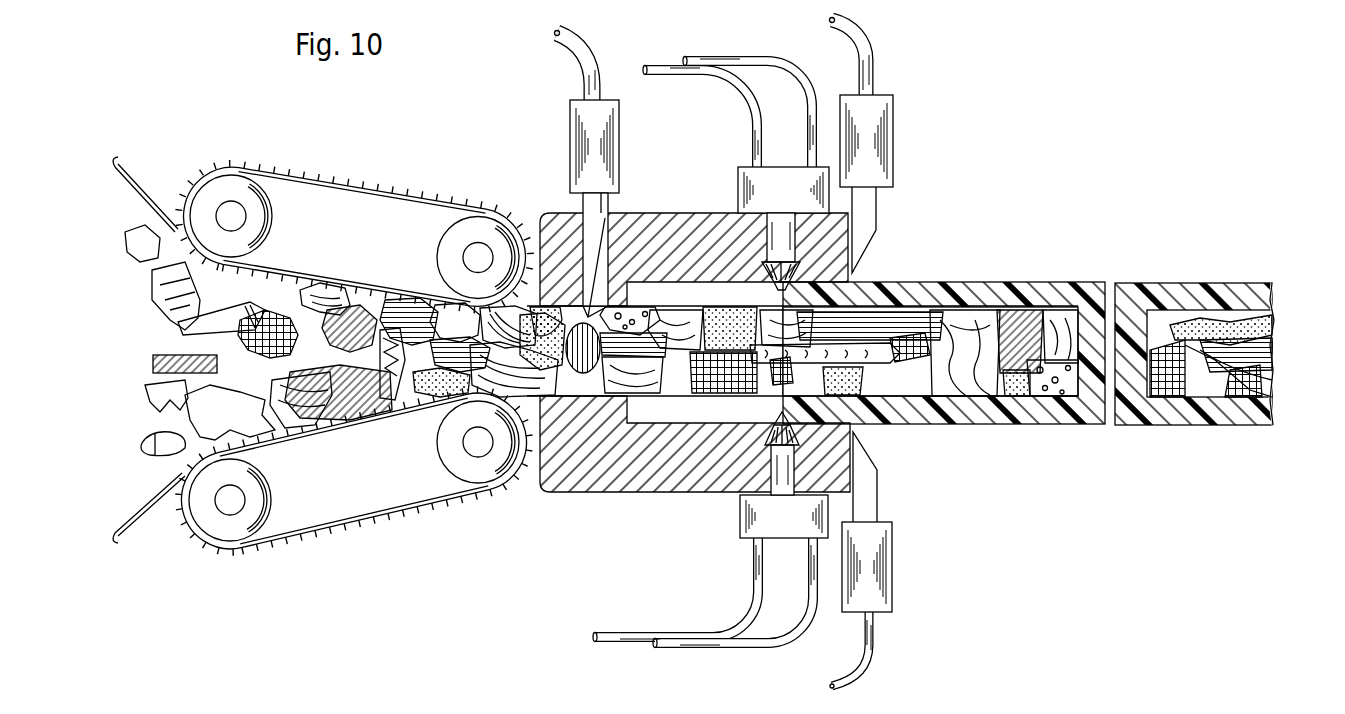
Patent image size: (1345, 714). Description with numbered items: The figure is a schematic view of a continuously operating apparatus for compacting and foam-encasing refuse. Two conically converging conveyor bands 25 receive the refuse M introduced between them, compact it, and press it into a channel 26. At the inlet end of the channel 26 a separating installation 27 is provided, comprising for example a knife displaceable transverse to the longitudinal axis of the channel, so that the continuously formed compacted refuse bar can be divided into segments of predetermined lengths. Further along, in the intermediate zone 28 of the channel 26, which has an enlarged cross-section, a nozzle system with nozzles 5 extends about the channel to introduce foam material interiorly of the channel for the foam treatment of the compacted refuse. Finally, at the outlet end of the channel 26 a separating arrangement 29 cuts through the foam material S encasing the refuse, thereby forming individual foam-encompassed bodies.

The conveyor bands 25 is at (347, 212).
The channel 26 is at (673, 228).
The separating installation 27 is at (595, 217).
The intermediate zone 28 is at (677, 407).
The nozzles 5 is at (781, 178).
The separating arrangement 29 is at (865, 217).
The foam material S is at (1088, 283).
The refuse M is at (197, 347).